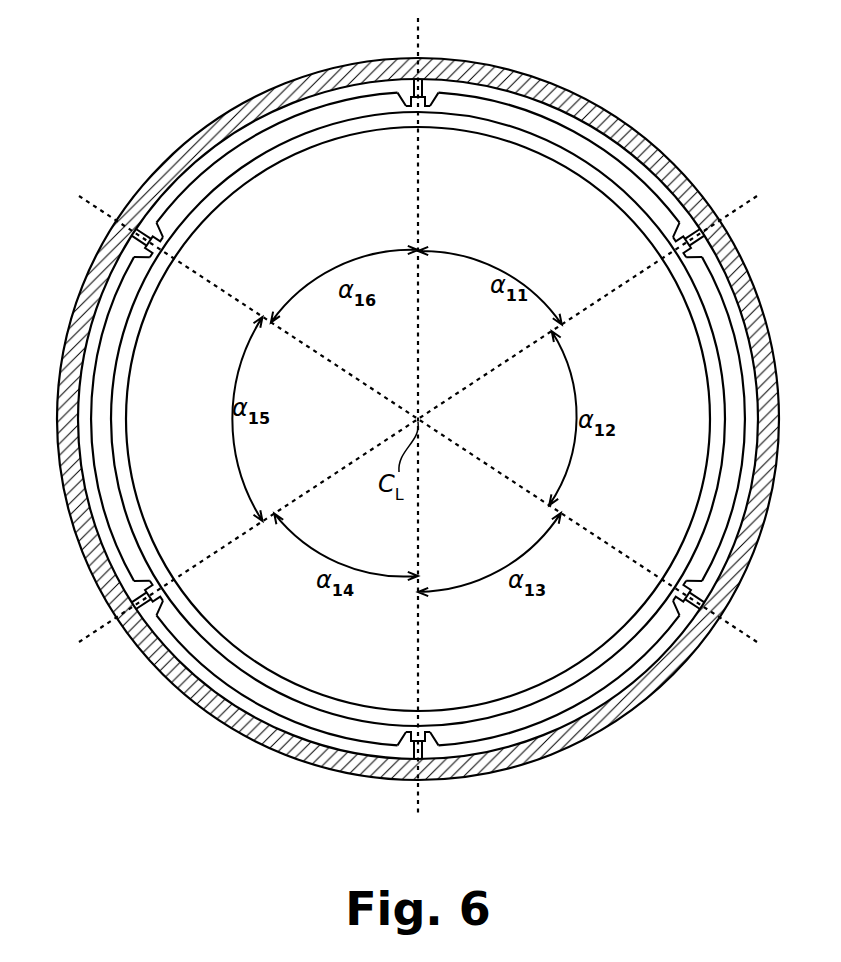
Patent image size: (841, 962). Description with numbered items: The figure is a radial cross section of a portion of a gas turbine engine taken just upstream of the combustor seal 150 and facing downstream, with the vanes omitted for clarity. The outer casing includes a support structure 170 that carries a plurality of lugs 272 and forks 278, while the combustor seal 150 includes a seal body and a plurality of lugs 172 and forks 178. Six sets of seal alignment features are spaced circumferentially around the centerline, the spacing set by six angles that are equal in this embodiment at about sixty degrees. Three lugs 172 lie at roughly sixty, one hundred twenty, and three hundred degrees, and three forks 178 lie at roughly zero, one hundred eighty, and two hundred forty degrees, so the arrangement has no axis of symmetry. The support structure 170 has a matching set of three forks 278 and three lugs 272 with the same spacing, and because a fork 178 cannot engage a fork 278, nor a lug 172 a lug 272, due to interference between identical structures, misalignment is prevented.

The combustor seal 150 is at (285, 137).
The support structure 170 is at (614, 126).
The lug 172 is at (158, 232).
The fork 178 is at (426, 92).
The lug 272 is at (410, 88).
The fork 278 is at (676, 232).